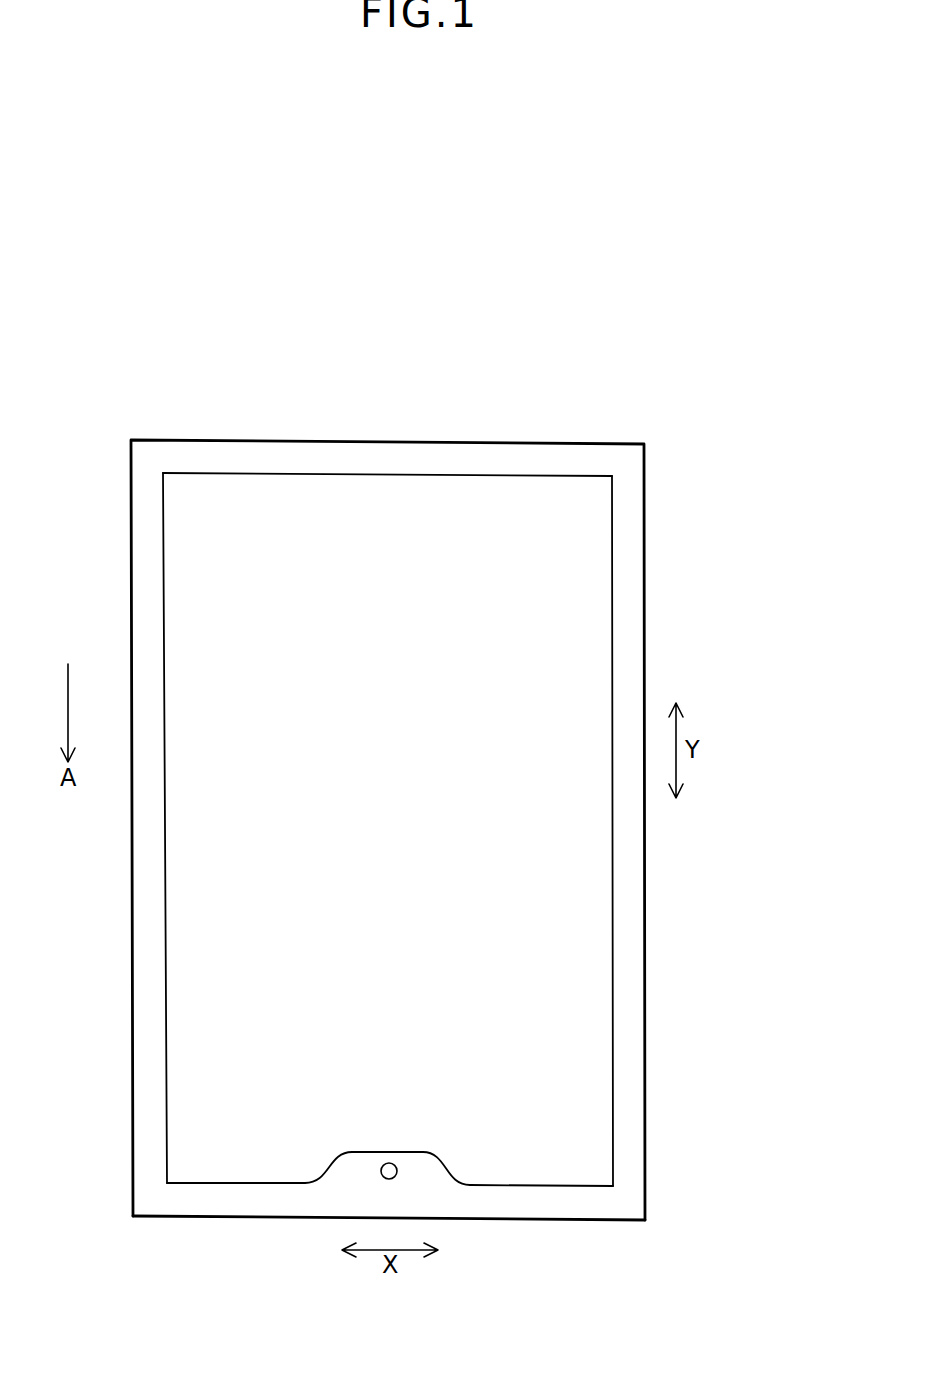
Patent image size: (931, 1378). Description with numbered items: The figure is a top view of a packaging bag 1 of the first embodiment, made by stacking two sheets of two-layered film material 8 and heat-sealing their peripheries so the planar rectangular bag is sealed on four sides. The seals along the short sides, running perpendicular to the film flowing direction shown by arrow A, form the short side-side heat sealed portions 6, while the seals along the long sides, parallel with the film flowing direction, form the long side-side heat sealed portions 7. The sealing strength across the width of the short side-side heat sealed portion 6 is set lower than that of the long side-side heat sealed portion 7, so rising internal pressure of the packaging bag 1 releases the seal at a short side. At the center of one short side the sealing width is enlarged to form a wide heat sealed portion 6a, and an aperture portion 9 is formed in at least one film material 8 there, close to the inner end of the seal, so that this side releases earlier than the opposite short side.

The packaging bag 1 is at (698, 566).
The short side-side heat sealed portion 6 is at (356, 458).
The wide heat sealed portion 6a is at (423, 1157).
The long side-side heat sealed portion 7 is at (148, 1020).
The film material 8 is at (580, 1202).
The aperture portion 9 is at (388, 1172).